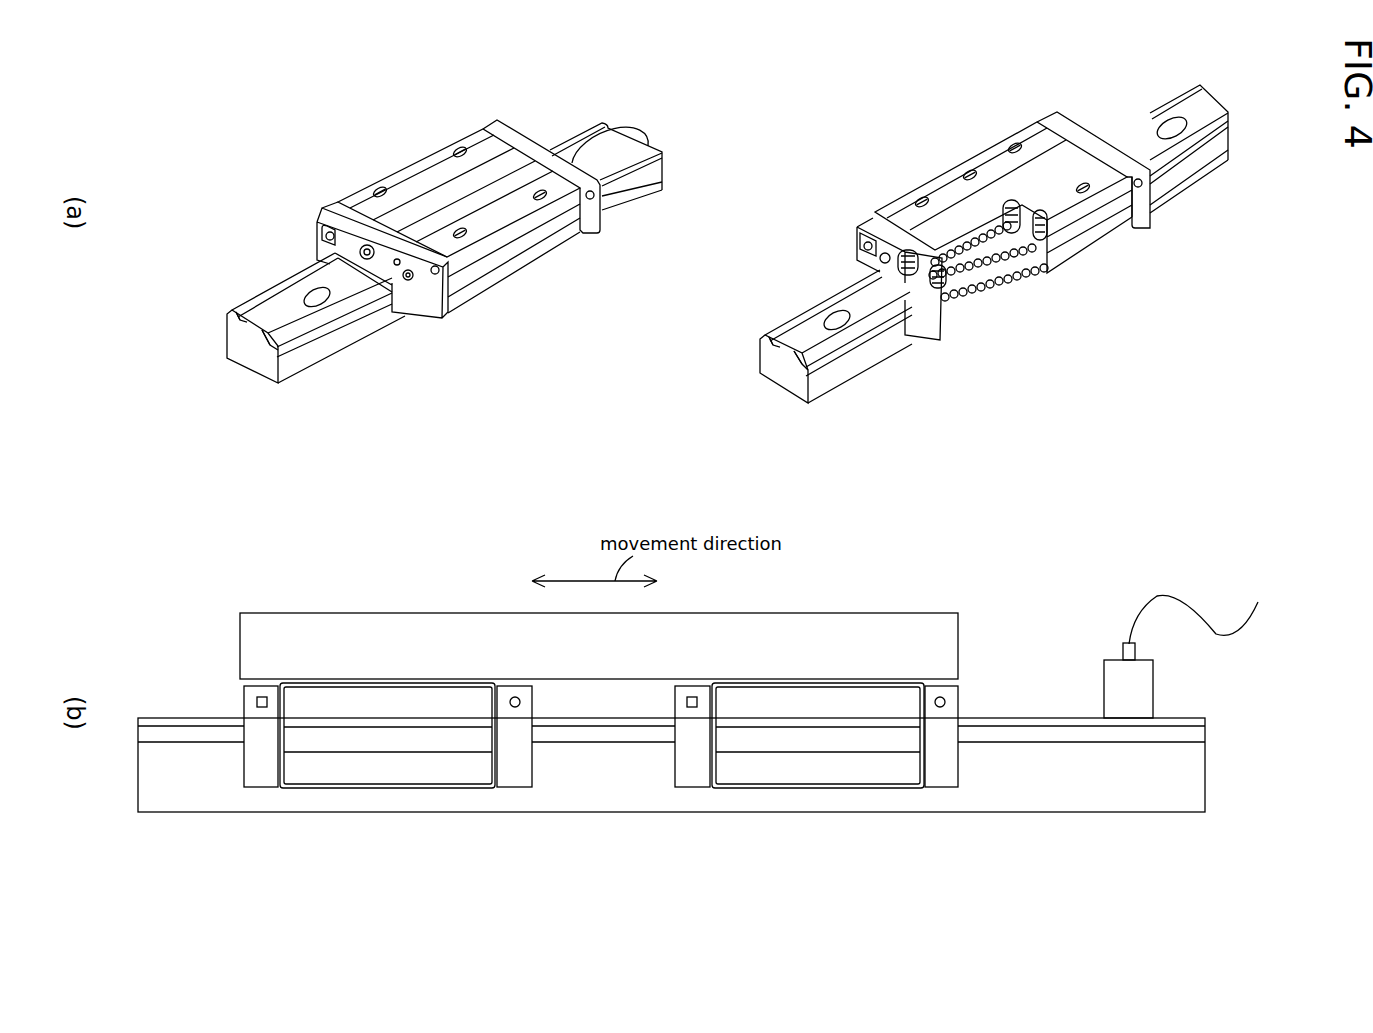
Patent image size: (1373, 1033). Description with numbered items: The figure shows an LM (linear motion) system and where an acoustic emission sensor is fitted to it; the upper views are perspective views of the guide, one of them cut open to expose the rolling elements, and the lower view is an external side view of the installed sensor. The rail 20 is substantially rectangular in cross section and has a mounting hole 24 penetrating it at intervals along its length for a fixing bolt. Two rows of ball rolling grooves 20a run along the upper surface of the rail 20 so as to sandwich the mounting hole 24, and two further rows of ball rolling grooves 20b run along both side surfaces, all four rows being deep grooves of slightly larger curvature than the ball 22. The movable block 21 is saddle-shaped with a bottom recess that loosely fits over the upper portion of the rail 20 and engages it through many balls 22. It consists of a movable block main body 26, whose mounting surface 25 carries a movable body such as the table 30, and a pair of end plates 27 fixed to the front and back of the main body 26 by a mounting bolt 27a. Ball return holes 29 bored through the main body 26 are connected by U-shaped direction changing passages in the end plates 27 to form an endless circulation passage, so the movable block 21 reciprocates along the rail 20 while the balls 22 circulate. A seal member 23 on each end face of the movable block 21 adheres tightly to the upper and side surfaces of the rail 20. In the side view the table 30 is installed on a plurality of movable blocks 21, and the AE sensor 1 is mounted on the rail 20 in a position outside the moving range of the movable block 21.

The AE sensor 1 is at (1155, 687).
The rail 20 is at (327, 347).
The ball rolling grooves 20a is at (247, 298).
The ball rolling grooves 20b is at (225, 333).
The movable block 21 is at (364, 179).
The ball 22 is at (947, 227).
The seal member 23 is at (320, 247).
The mounting hole 24 is at (623, 132).
The mounting surface 25 is at (405, 177).
The movable block main body 26 is at (437, 132).
The end plates 27 is at (495, 128).
The mounting bolt 27a is at (330, 227).
The ball return holes 29 is at (1023, 193).
The table 30 is at (837, 630).